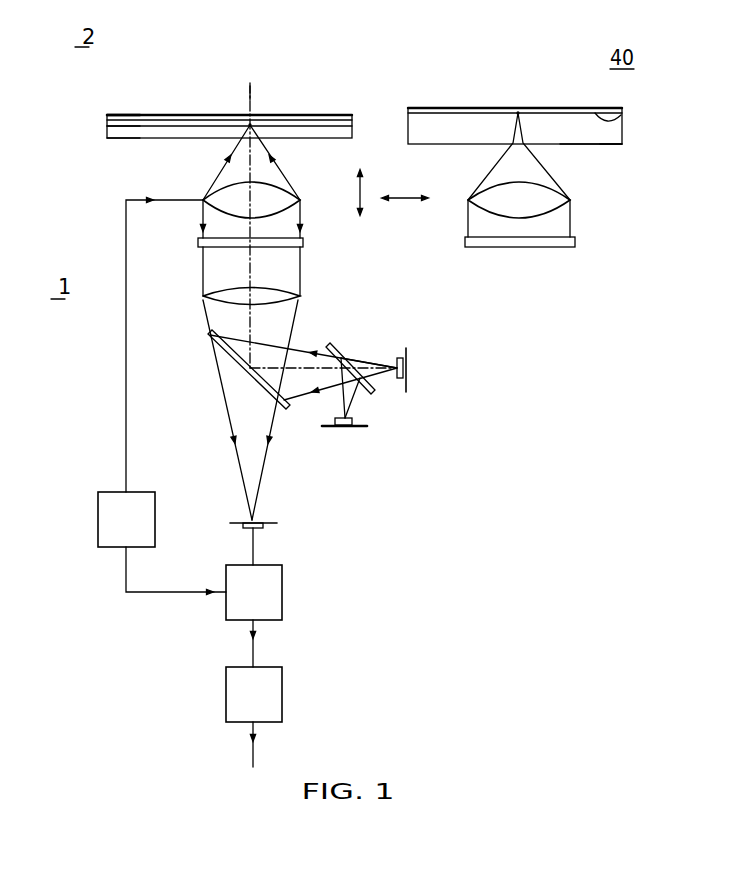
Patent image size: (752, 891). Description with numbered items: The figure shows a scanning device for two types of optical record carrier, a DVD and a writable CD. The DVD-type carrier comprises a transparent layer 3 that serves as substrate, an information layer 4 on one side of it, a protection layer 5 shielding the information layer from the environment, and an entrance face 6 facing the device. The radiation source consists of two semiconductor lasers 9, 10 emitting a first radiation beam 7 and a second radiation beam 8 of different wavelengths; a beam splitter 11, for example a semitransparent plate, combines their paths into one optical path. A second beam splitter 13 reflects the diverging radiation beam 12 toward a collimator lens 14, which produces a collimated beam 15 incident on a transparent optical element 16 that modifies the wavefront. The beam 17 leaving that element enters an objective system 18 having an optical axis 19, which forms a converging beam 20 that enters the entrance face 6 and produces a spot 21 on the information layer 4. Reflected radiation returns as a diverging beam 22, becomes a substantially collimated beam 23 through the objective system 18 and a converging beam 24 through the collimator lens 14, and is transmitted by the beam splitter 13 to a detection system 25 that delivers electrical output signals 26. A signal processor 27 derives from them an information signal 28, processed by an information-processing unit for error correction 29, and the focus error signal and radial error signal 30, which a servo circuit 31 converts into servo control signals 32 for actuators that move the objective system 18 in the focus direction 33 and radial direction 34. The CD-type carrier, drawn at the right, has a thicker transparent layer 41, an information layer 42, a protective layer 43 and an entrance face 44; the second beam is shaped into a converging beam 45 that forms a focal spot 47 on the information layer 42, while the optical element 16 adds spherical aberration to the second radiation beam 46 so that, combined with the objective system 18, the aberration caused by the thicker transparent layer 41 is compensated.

The transparent layer 3 is at (107, 131).
The information layer 4 is at (107, 116).
The protection layer 5 is at (147, 114).
The entrance face 6 is at (107, 140).
The first radiation beam 7 is at (341, 405).
The second radiation beam 8 is at (378, 362).
The semiconductor laser 9 is at (333, 428).
The semiconductor laser 10 is at (408, 362).
The beam splitter 11 is at (343, 338).
The diverging radiation beam 12 is at (298, 346).
The second beam splitter 13 is at (208, 335).
The collimator lens 14 is at (203, 297).
The collimated beam 15 is at (203, 270).
The transparent optical element 16 is at (198, 244).
The beam 17 is at (203, 215).
The objective system 18 is at (203, 200).
The optical axis 19 is at (254, 93).
The converging beam 20 is at (229, 158).
The spot 21 is at (250, 125).
The diverging beam 22 is at (278, 168).
The substantially collimated beam 23 is at (305, 230).
The converging beam 24 is at (296, 315).
The detection system 25 is at (278, 525).
The electrical output signals 26 is at (252, 547).
The signal processor 27 is at (226, 563).
The information signal 28 is at (252, 648).
The information-processing unit for error correction 29 is at (226, 668).
The focus error signal and radial error signal 30 is at (147, 593).
The servo circuit 31 is at (108, 492).
The servo control signals 32 is at (126, 395).
The focus direction 33 is at (362, 182).
The radial direction 34 is at (408, 198).
The transparent layer 41 is at (600, 135).
The information layer 42 is at (620, 117).
The protective layer 43 is at (570, 107).
The entrance face 44 is at (602, 145).
The converging beam 45 is at (545, 170).
The second radiation beam incident on the objective system 46 is at (572, 223).
The focal spot 47 is at (518, 113).